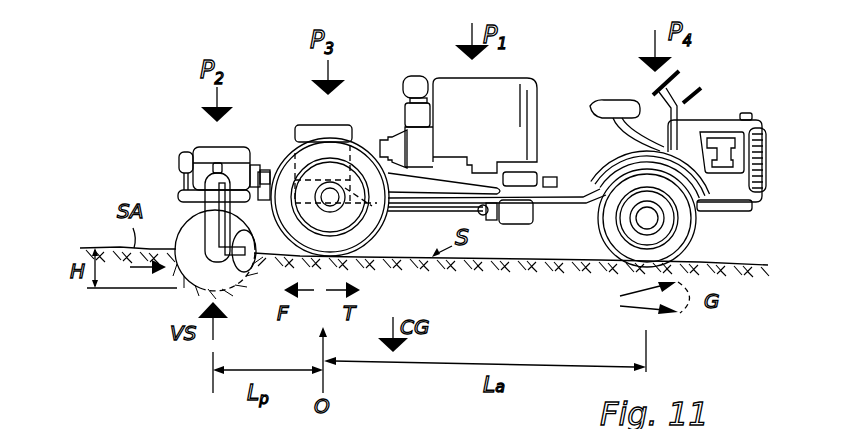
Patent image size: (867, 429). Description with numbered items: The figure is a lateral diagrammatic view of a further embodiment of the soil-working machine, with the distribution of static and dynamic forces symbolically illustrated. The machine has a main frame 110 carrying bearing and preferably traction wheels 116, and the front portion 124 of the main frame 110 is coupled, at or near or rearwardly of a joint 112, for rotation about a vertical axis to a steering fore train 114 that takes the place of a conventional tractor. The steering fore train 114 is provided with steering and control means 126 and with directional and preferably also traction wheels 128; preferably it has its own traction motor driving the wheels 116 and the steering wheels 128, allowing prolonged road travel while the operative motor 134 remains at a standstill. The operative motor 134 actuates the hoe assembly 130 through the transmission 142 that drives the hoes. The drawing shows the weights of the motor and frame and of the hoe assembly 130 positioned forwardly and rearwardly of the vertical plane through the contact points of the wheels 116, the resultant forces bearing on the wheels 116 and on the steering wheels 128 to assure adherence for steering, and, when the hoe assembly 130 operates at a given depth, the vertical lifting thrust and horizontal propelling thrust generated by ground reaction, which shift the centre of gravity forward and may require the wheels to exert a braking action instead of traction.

The main frame 110 is at (557, 200).
The joint 112 is at (668, 148).
The steering fore train 114 is at (712, 118).
The bearing-traction wheels 116 is at (372, 233).
The front portion of main frame 124 is at (596, 175).
The steering and control means 126 is at (620, 100).
The steering wheels 128 is at (684, 237).
The hoe assembly 130 is at (181, 287).
The operative motor 134 is at (503, 96).
The transmission 142 is at (176, 154).